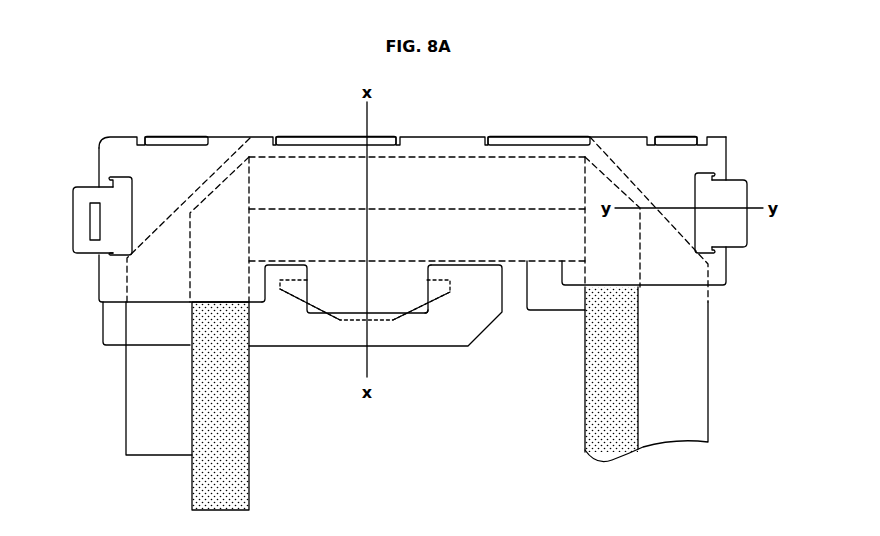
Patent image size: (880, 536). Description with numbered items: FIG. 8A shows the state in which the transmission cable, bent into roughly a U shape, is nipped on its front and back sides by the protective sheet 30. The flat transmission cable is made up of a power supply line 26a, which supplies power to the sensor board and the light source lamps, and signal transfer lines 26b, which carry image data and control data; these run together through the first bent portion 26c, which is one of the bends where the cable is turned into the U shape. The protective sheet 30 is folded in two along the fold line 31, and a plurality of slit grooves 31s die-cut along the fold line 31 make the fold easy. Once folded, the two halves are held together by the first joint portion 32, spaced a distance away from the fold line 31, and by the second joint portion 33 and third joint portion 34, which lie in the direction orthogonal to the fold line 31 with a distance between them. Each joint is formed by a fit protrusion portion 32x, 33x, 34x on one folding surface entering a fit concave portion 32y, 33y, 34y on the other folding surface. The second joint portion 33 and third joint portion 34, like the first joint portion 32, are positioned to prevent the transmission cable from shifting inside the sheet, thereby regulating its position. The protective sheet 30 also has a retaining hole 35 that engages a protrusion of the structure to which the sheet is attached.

The protective sheet 30 is at (133, 118).
The fold line 31 is at (432, 135).
The slit grooves 31s is at (173, 142).
The first joint portion 32 is at (363, 349).
The fit protrusion portion 32x is at (379, 303).
The fit concave portion 32y is at (417, 314).
The second joint portion 33 is at (746, 176).
The fit protrusion portion 33x is at (738, 187).
The fit concave portion 33y is at (710, 177).
The third joint portion 34 is at (82, 183).
The fit protrusion portion 34x is at (85, 193).
The fit concave portion 34y is at (113, 178).
The retaining hole 35 is at (92, 222).
The power supply line 26a is at (137, 403).
The signal transfer lines 26b is at (240, 468).
The first bent portion 26c is at (643, 185).